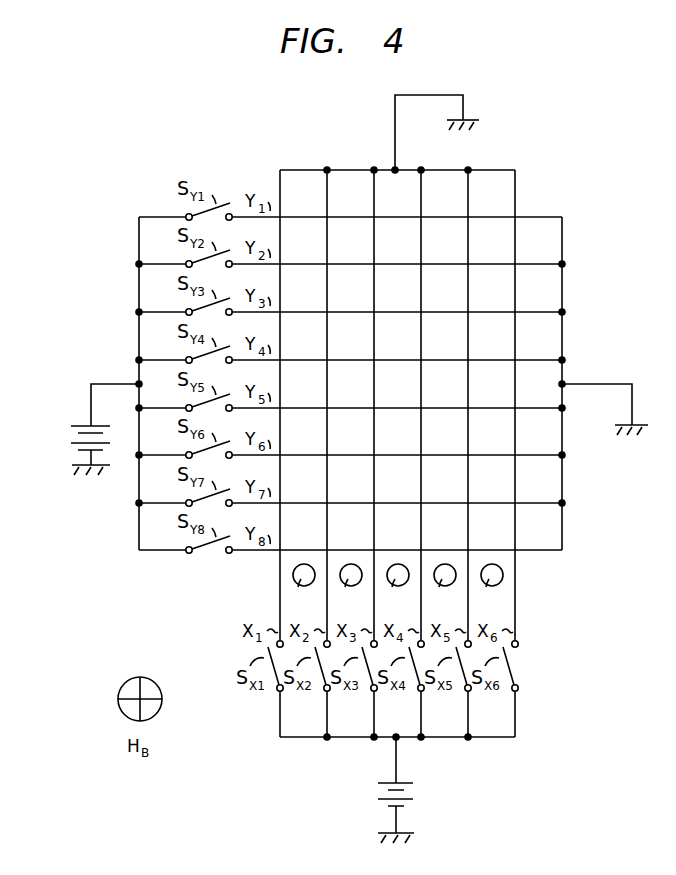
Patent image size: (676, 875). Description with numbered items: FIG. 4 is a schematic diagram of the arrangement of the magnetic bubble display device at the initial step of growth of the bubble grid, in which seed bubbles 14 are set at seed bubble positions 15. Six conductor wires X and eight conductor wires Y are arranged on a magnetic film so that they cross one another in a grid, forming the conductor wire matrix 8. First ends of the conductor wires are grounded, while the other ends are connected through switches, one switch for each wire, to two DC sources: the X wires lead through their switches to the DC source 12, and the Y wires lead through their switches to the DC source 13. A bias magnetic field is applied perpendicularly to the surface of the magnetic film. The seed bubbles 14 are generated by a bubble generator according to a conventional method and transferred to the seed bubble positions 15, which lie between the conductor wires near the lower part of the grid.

The key switch matrix wiring 8 is at (387, 178).
The DC source 12 is at (413, 792).
The DC source 13 is at (73, 442).
The seed bubbles 14 is at (398, 590).
The seed bubble positions 15 is at (398, 590).